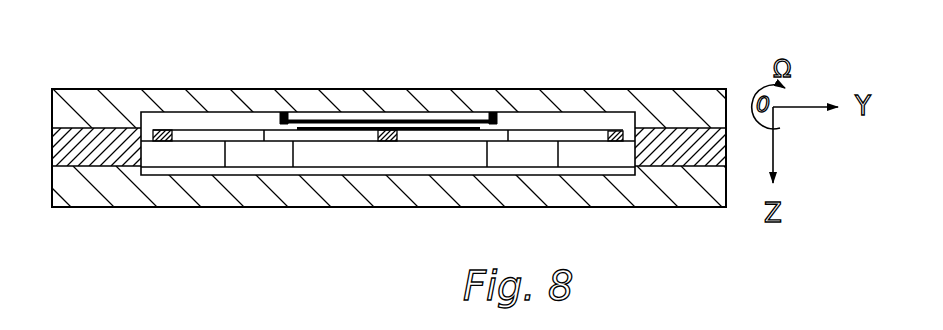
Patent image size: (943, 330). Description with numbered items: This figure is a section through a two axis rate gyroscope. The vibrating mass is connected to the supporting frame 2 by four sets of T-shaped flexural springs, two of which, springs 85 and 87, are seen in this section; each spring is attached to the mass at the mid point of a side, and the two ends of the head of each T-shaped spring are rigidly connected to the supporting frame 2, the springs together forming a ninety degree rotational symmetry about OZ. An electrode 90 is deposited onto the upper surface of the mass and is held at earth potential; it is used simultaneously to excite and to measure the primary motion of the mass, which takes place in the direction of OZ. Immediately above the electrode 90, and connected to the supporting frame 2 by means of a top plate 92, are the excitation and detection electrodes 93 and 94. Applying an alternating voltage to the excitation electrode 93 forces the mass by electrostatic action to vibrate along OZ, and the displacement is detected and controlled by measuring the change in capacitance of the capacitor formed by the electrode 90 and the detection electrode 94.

The supporting frame 2 is at (107, 133).
The T-shaped flexural spring 85 is at (164, 130).
The T-shaped flexural spring 87 is at (614, 131).
The electrode 90 is at (340, 122).
The top plate 92 is at (691, 99).
The excitation electrode 93 is at (402, 84).
The detection electrode 94 is at (476, 134).